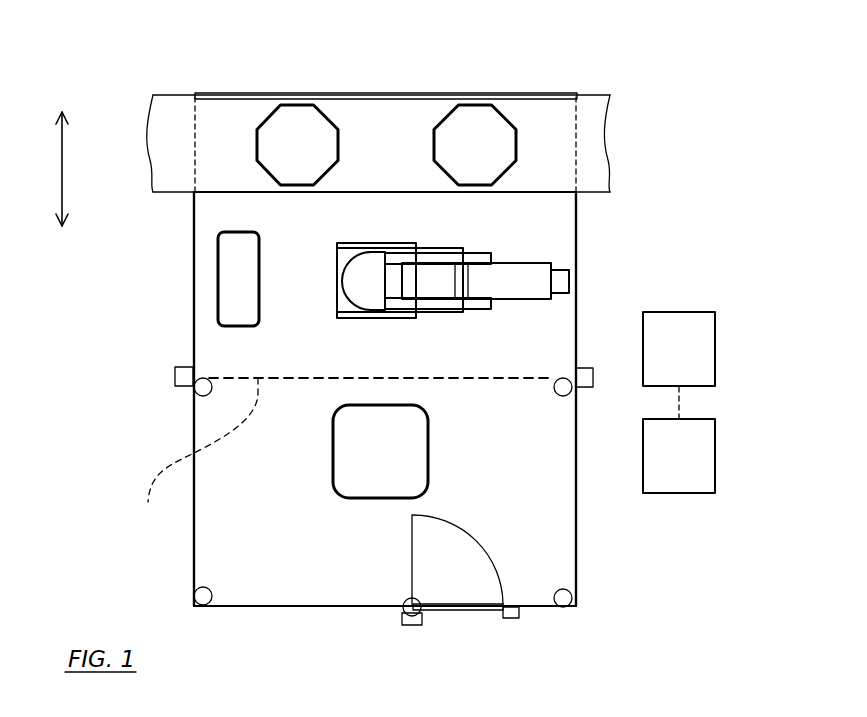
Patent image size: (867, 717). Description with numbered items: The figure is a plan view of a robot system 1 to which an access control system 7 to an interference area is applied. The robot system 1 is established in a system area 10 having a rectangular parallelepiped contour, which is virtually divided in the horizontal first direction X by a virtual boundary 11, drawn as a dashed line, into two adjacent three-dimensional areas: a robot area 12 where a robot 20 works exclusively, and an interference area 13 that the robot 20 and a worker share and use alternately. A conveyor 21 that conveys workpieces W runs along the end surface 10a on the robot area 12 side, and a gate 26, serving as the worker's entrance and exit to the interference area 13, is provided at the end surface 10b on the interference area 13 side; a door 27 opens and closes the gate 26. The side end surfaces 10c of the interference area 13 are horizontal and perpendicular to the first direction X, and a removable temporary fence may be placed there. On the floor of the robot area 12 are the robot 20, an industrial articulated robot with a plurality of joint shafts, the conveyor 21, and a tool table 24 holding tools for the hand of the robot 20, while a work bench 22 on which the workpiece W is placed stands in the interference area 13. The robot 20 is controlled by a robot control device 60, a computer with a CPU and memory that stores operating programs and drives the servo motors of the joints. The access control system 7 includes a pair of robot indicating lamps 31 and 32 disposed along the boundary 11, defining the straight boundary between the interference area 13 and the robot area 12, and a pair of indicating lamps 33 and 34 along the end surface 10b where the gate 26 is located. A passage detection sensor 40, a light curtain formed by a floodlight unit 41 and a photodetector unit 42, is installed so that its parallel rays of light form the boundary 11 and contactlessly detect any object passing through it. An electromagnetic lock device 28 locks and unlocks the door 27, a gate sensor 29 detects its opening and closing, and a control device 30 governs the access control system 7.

The robot system 1 is at (668, 98).
The access control system 7 is at (675, 575).
The system area 10 is at (201, 89).
The end surface 10a is at (351, 93).
The end surface 10b is at (283, 608).
The virtual end surfaces 10c is at (193, 545).
The virtual boundary 11 is at (198, 452).
The robot area 12 is at (317, 323).
The interference area 13 is at (317, 445).
The robot 20 is at (481, 244).
The conveyor 21 is at (599, 97).
The work bench 22 is at (331, 487).
The tool table 24 is at (218, 259).
The gate 26 is at (480, 618).
The door 27 is at (453, 612).
The electromagnetic lock device 28 is at (513, 620).
The gate sensor 29 is at (413, 625).
The control device 30 is at (694, 475).
The indicating lamp 31 is at (200, 396).
The indicating lamp 32 is at (565, 397).
The indicating lamp 33 is at (194, 598).
The indicating lamp 34 is at (572, 600).
The passage detection sensor 40 is at (160, 388).
The floodlight unit 41 is at (174, 375).
The photodetector unit 42 is at (584, 368).
The robot control device 60 is at (694, 368).
The workpiece W is at (283, 105).
The first direction X is at (55, 169).